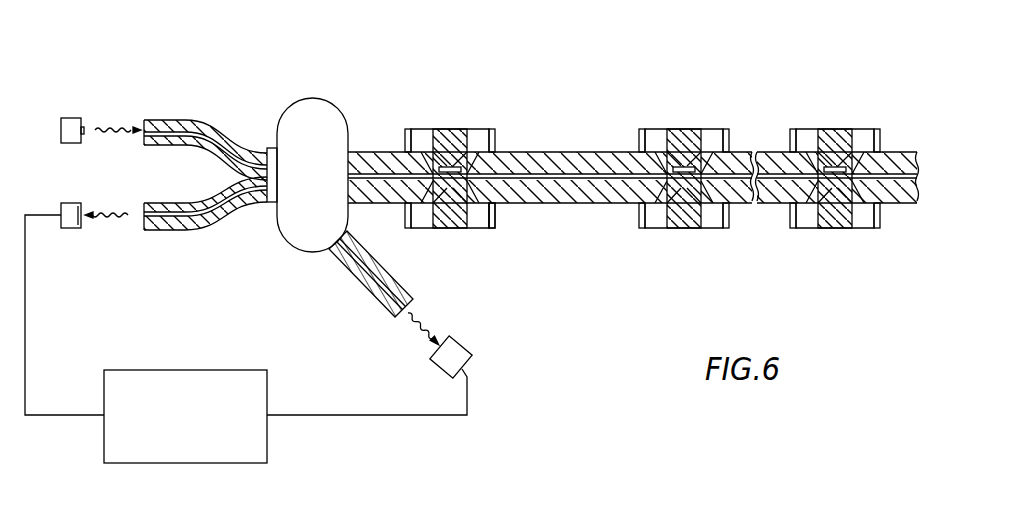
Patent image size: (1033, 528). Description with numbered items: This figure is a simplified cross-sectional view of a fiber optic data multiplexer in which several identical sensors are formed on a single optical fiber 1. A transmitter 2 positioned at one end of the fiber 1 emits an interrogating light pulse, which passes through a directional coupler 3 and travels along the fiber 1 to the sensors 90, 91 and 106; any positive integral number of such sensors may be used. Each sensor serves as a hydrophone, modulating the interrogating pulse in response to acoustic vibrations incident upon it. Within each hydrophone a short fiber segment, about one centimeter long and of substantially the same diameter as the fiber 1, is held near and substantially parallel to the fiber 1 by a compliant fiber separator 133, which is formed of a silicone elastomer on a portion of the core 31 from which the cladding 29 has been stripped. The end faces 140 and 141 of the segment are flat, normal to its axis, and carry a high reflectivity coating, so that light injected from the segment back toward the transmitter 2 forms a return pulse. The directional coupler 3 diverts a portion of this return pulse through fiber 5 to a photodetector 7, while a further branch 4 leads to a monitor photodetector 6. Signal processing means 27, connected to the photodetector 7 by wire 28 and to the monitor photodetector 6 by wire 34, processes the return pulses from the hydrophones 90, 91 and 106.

The optical fiber 1 is at (167, 118).
The transmitter 2 is at (60, 127).
The directional coupler 3 is at (285, 243).
The return optical fiber 4 is at (410, 292).
The fiber 5 is at (188, 232).
The monitor photodetector 6 is at (470, 347).
The photodetector 7 is at (70, 202).
The signal processing means 27 is at (180, 370).
The wire 28 is at (25, 320).
The cladding 29 is at (257, 148).
The core 31 is at (382, 172).
The wire 34 is at (345, 413).
The sensor 90 is at (482, 175).
The sensor 91 is at (718, 125).
The sensor 106 is at (810, 130).
The compliant fiber separator 133 is at (448, 135).
The end face 140 is at (497, 214).
The end face 141 is at (447, 180).